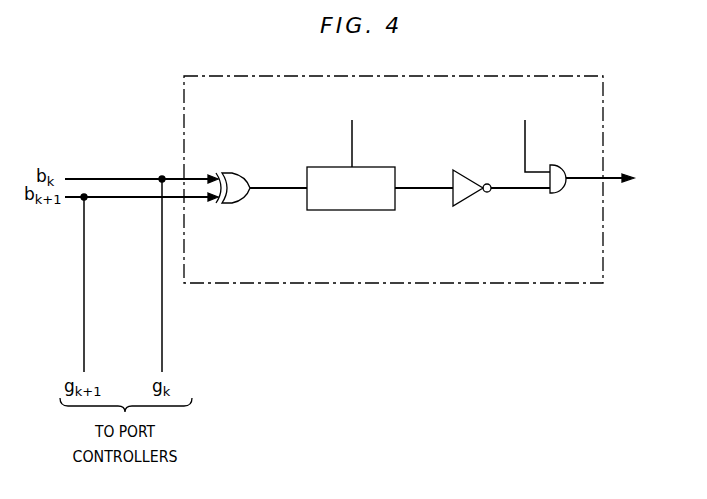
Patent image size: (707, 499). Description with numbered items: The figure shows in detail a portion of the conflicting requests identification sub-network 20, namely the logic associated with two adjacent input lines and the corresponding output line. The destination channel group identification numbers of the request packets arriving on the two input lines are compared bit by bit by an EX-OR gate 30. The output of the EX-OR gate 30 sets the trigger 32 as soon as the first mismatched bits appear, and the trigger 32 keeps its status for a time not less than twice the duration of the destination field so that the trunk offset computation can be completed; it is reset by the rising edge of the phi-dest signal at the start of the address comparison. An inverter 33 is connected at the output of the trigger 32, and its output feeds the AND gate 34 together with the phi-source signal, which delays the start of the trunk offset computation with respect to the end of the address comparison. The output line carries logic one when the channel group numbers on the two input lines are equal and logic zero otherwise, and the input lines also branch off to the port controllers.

The conflicting requests identification sub-network 20 is at (262, 333).
The EX-OR gate 30 is at (240, 175).
The trigger 32 is at (383, 166).
The inverter 33 is at (465, 171).
The AND gate 34 is at (555, 168).